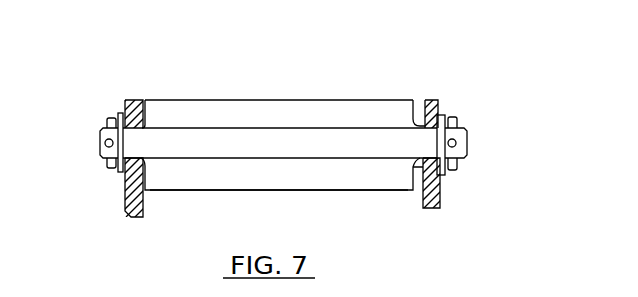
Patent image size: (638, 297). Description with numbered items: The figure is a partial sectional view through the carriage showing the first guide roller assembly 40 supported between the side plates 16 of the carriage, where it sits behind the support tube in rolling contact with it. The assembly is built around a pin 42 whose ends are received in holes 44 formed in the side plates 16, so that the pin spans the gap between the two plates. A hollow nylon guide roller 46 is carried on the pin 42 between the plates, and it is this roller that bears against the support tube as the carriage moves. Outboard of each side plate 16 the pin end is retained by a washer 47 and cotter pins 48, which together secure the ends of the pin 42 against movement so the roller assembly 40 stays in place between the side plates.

The side plate 16 is at (127, 210).
The first guide roller assembly 40 is at (300, 84).
The pin 42 is at (225, 143).
The hole 44 is at (423, 133).
The hollow nylon guide roller 46 is at (352, 185).
The washer 47 is at (445, 118).
The cotter pin 48 is at (456, 168).